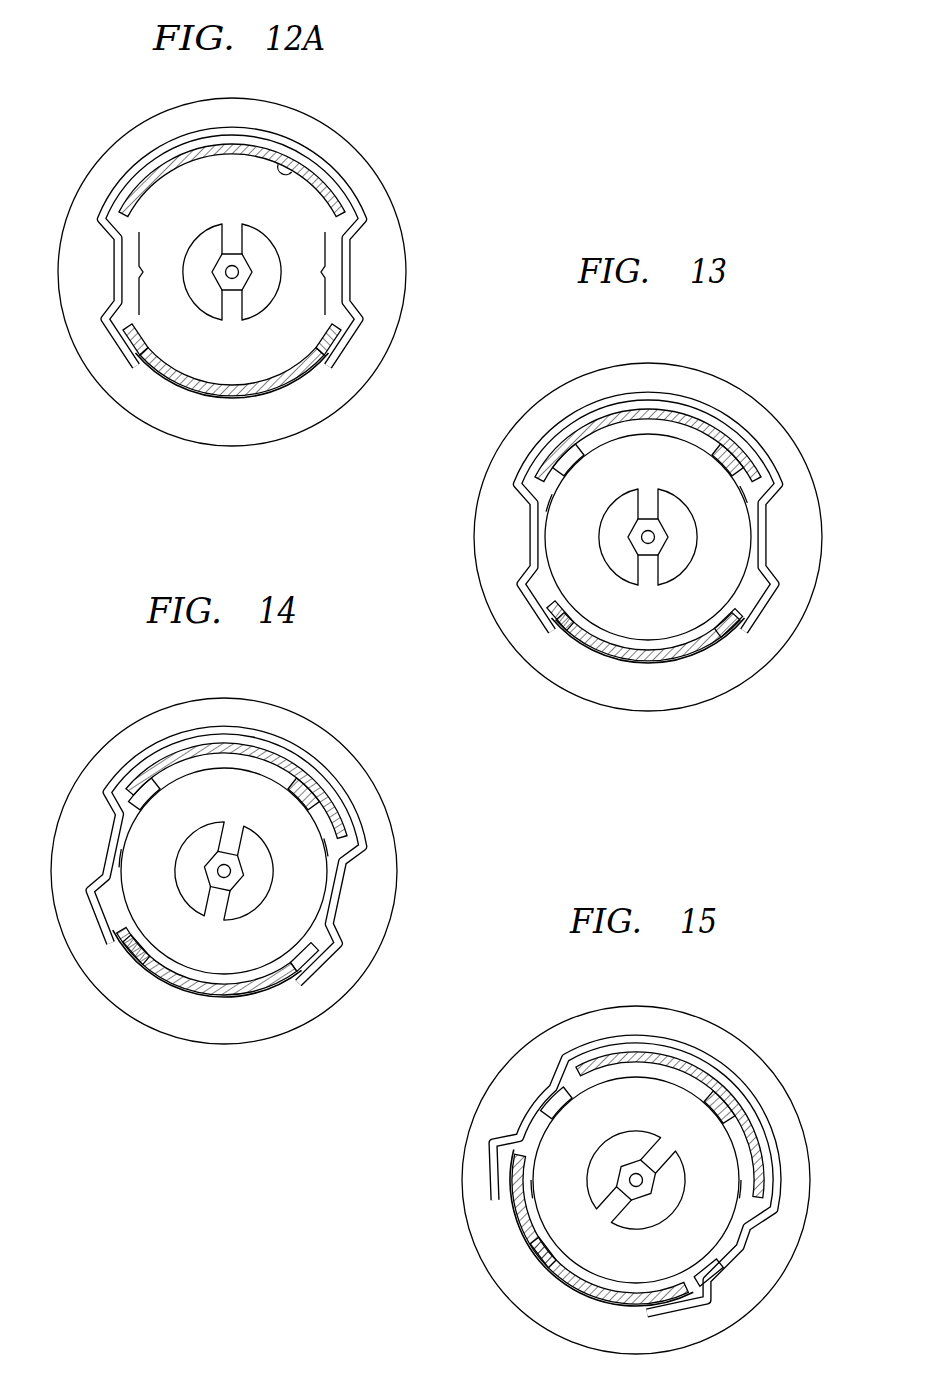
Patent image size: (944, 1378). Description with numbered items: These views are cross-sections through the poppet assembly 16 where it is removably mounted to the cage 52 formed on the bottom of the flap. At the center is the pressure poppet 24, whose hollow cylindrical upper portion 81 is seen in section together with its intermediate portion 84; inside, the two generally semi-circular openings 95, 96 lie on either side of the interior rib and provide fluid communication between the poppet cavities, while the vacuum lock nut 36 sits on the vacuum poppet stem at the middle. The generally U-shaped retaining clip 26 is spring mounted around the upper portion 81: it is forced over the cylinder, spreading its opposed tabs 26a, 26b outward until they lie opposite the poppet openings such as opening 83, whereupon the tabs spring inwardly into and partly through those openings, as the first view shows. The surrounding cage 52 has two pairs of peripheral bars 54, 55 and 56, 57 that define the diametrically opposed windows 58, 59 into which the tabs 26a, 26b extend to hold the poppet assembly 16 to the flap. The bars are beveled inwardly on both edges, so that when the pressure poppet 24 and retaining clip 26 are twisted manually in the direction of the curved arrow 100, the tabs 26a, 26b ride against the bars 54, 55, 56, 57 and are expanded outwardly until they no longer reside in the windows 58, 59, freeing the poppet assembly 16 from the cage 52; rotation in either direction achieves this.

In FIG. 12A, the poppet assembly 16 is at (101, 131).
In FIG. 13, the poppet assembly 16 is at (519, 398).
In FIG. 14, the poppet assembly 16 is at (97, 718).
In FIG. 15, the poppet assembly 16 is at (436, 1192).
In FIG. 12A, the pressure poppet 24 is at (264, 99).
In FIG. 13, the pressure poppet 24 is at (560, 385).
In FIG. 14, the pressure poppet 24 is at (389, 812).
In FIG. 15, the pressure poppet 24 is at (640, 1004).
In FIG. 12A, the retaining clip 26 is at (231, 264).
In FIG. 13, the retaining clip 26 is at (640, 397).
In FIG. 14, the retaining clip 26 is at (192, 728).
In FIG. 15, the retaining clip 26 is at (620, 1040).
In FIG. 12A, the tab 26a is at (346, 276).
In FIG. 14, the tab 26a is at (340, 910).
In FIG. 15, the tab 26a is at (727, 1260).
In FIG. 12A, the tab 26b is at (120, 270).
In FIG. 14, the tab 26b is at (109, 852).
In FIG. 15, the tab 26b is at (535, 1115).
In FIG. 12A, the vacuum lock nut 36 is at (231, 249).
In FIG. 13, the vacuum lock nut 36 is at (647, 516).
In FIG. 14, the vacuum lock nut 36 is at (224, 871).
In FIG. 15, the vacuum lock nut 36 is at (652, 1164).
In FIG. 13, the cage 52 is at (588, 611).
In FIG. 14, the cage 52 is at (224, 871).
In FIG. 15, the cage 52 is at (636, 1180).
In FIG. 13, the peripheral bar 54 is at (718, 466).
In FIG. 14, the peripheral bar 54 is at (290, 797).
In FIG. 15, the peripheral bar 54 is at (707, 1094).
In FIG. 13, the peripheral bar 55 is at (578, 604).
In FIG. 14, the peripheral bar 55 is at (158, 946).
In FIG. 15, the peripheral bar 55 is at (556, 1258).
In FIG. 13, the peripheral bar 56 is at (722, 607).
In FIG. 14, the peripheral bar 56 is at (298, 940).
In FIG. 15, the peripheral bar 56 is at (705, 1248).
In FIG. 13, the peripheral bar 57 is at (574, 468).
In FIG. 14, the peripheral bar 57 is at (147, 806).
In FIG. 15, the peripheral bar 57 is at (552, 1112).
In FIG. 13, the window 58 is at (747, 494).
In FIG. 14, the window 58 is at (327, 847).
In FIG. 15, the window 58 is at (742, 1186).
In FIG. 13, the window 59 is at (549, 502).
In FIG. 14, the window 59 is at (123, 858).
In FIG. 15, the window 59 is at (532, 1190).
In FIG. 12A, the upper portion 81 is at (288, 182).
In FIG. 12A, the opening 83 is at (154, 273).
In FIG. 12A, the intermediate portion 84 is at (308, 273).
In FIG. 12A, the semi-circular opening 95 is at (202, 272).
In FIG. 13, the semi-circular opening 95 is at (618, 537).
In FIG. 14, the semi-circular opening 95 is at (195, 865).
In FIG. 15, the semi-circular opening 95 is at (613, 1160).
In FIG. 12A, the semi-circular opening 96 is at (261, 272).
In FIG. 13, the semi-circular opening 96 is at (677, 537).
In FIG. 14, the semi-circular opening 96 is at (253, 877).
In FIG. 15, the semi-circular opening 96 is at (657, 1200).
In FIG. 13, the curved arrow 100 is at (752, 360).
In FIG. 14, the curved arrow 100 is at (325, 697).
In FIG. 15, the curved arrow 100 is at (738, 1006).